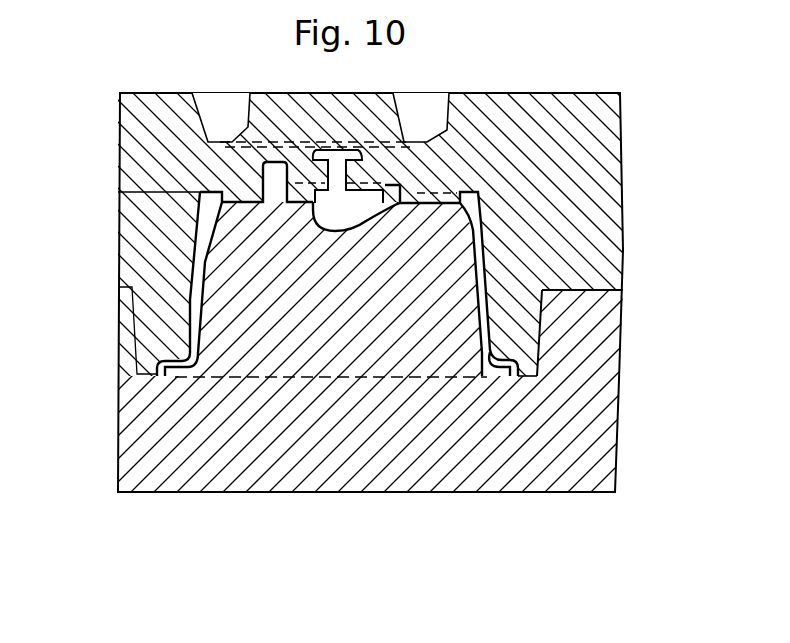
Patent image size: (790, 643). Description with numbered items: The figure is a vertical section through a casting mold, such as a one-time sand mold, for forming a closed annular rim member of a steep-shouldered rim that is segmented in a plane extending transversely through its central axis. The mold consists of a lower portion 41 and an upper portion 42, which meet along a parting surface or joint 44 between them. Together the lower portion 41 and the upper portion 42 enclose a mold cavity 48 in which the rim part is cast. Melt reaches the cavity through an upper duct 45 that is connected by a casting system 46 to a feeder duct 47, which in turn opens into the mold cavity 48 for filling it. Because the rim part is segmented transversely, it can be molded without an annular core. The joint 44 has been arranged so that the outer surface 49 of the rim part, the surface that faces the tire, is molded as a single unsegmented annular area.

The lower portion 41 is at (590, 437).
The upper portion 42 is at (592, 172).
The parting surface 44 is at (550, 295).
The upper duct 45 is at (223, 120).
The casting system 46 is at (342, 215).
The feeder duct 47 is at (280, 176).
The mold cavity 48 is at (207, 202).
The outer surface 49 is at (192, 266).